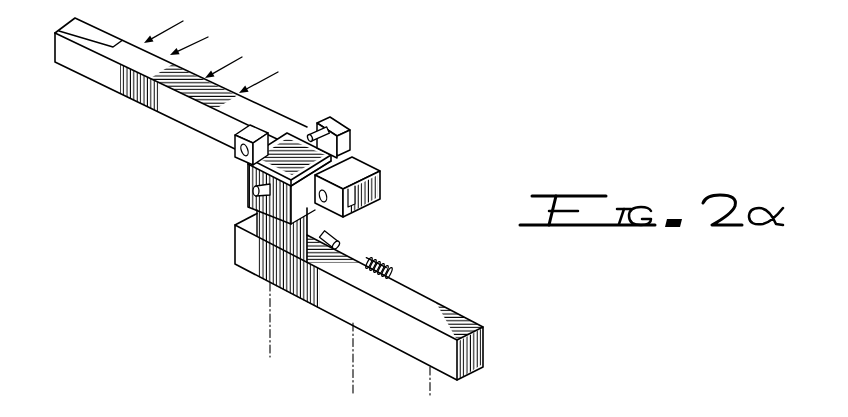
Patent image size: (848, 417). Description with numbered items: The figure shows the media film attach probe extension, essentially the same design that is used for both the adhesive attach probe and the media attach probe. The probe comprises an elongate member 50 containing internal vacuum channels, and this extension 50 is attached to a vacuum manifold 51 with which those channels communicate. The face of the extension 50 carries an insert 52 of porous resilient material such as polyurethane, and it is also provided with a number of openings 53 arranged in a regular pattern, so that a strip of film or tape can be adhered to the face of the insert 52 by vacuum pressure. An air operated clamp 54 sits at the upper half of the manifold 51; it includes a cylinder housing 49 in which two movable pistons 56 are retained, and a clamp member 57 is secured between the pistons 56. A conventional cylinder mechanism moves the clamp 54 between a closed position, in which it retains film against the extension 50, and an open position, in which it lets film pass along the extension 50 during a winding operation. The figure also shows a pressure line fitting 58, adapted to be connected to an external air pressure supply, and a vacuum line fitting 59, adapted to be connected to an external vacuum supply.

The cylinder housing 49 is at (250, 175).
The elongate member 50 is at (134, 97).
The vacuum manifold 51 is at (348, 305).
The insert 52 is at (112, 40).
The openings 53 is at (192, 72).
The air operated clamp 54 is at (345, 162).
The movable pistons 56 is at (309, 132).
The clamp member 57 is at (343, 123).
The pressure line fitting 58 is at (340, 241).
The vacuum line fitting 59 is at (392, 268).